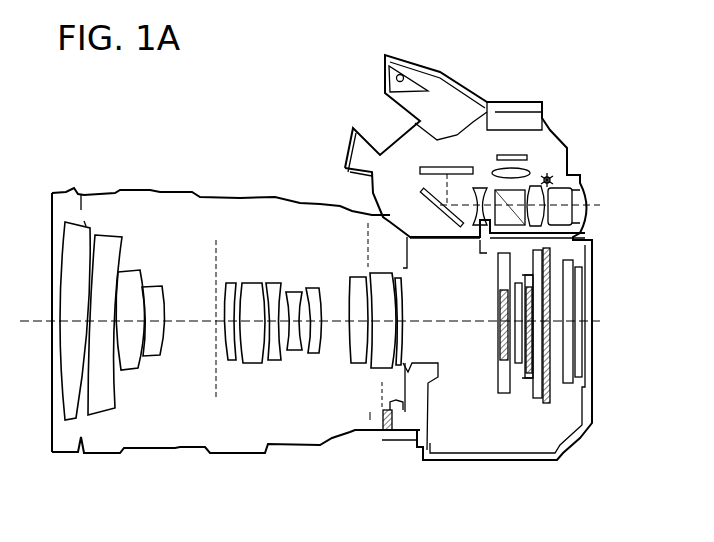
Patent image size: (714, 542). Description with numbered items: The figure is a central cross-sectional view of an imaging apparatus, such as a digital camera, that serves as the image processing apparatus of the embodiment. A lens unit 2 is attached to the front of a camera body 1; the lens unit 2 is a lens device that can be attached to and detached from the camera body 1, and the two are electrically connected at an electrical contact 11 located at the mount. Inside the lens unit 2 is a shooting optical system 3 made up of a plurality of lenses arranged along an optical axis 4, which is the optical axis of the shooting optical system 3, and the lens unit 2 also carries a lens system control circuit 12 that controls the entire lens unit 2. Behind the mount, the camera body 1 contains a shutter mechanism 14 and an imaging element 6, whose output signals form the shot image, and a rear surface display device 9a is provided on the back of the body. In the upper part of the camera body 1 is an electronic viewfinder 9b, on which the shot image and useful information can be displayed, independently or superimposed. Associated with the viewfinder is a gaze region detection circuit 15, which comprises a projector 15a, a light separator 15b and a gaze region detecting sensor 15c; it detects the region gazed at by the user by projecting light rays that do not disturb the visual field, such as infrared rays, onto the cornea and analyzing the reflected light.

The camera body 1 is at (556, 112).
The lens unit 2 is at (203, 192).
The shooting optical system 3 is at (145, 418).
The optical axis 4 is at (30, 322).
The imaging element 6 is at (527, 340).
The rear surface display device 9a is at (573, 360).
The electronic viewfinder 9b is at (437, 164).
The electrical contact 11 is at (376, 418).
The lens system control circuit 12 is at (357, 393).
The shutter mechanism 14 is at (541, 385).
The gaze region detection circuit 15 is at (503, 151).
The projector 15a is at (553, 178).
The light separator 15b is at (543, 212).
The gaze region detecting sensor 15c is at (529, 157).